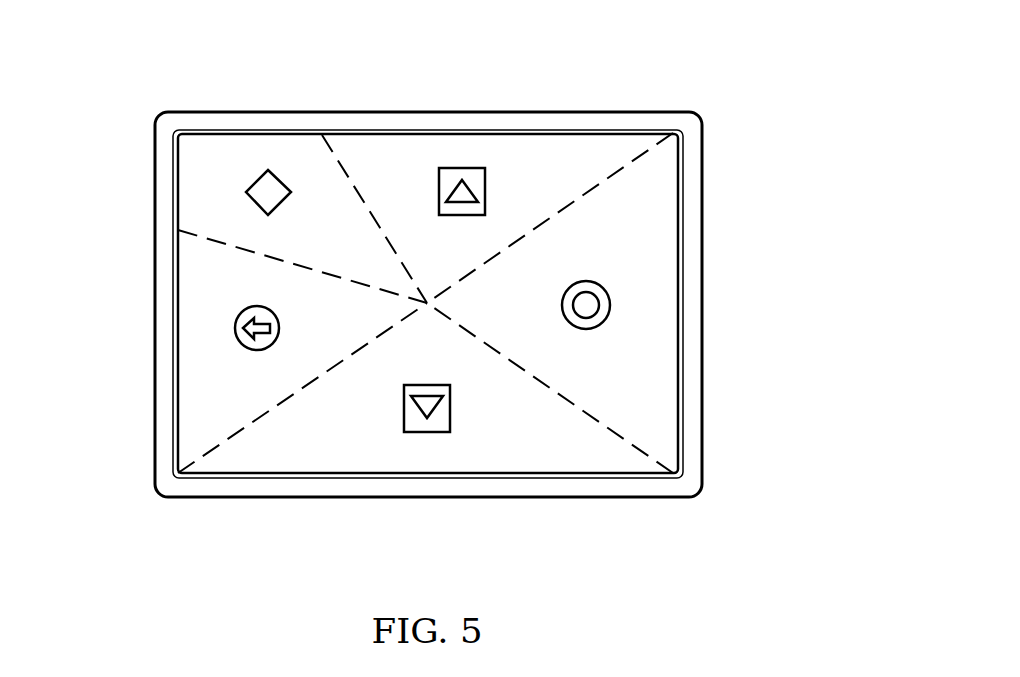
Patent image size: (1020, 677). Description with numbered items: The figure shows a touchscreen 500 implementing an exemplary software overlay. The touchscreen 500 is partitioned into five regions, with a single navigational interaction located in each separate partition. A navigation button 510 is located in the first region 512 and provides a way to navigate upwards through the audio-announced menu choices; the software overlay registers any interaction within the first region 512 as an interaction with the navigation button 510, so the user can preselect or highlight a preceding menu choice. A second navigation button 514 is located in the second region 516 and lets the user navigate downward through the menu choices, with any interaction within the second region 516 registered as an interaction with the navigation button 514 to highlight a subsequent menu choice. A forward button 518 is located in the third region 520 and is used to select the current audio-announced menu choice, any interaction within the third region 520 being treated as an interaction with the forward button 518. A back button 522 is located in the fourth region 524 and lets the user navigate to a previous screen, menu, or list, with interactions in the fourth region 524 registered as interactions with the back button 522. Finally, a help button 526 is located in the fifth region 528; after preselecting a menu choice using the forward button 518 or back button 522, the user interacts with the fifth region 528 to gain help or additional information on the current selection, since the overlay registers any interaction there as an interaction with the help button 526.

The touchscreen 500 is at (619, 496).
The navigation button 510 is at (461, 168).
The first region 512 is at (615, 148).
The navigation button 514 is at (427, 432).
The second region 516 is at (263, 461).
The forward button 518 is at (610, 305).
The third region 520 is at (662, 272).
The back button 522 is at (235, 328).
The fourth region 524 is at (193, 428).
The help button 526 is at (257, 178).
The fifth region 528 is at (240, 150).